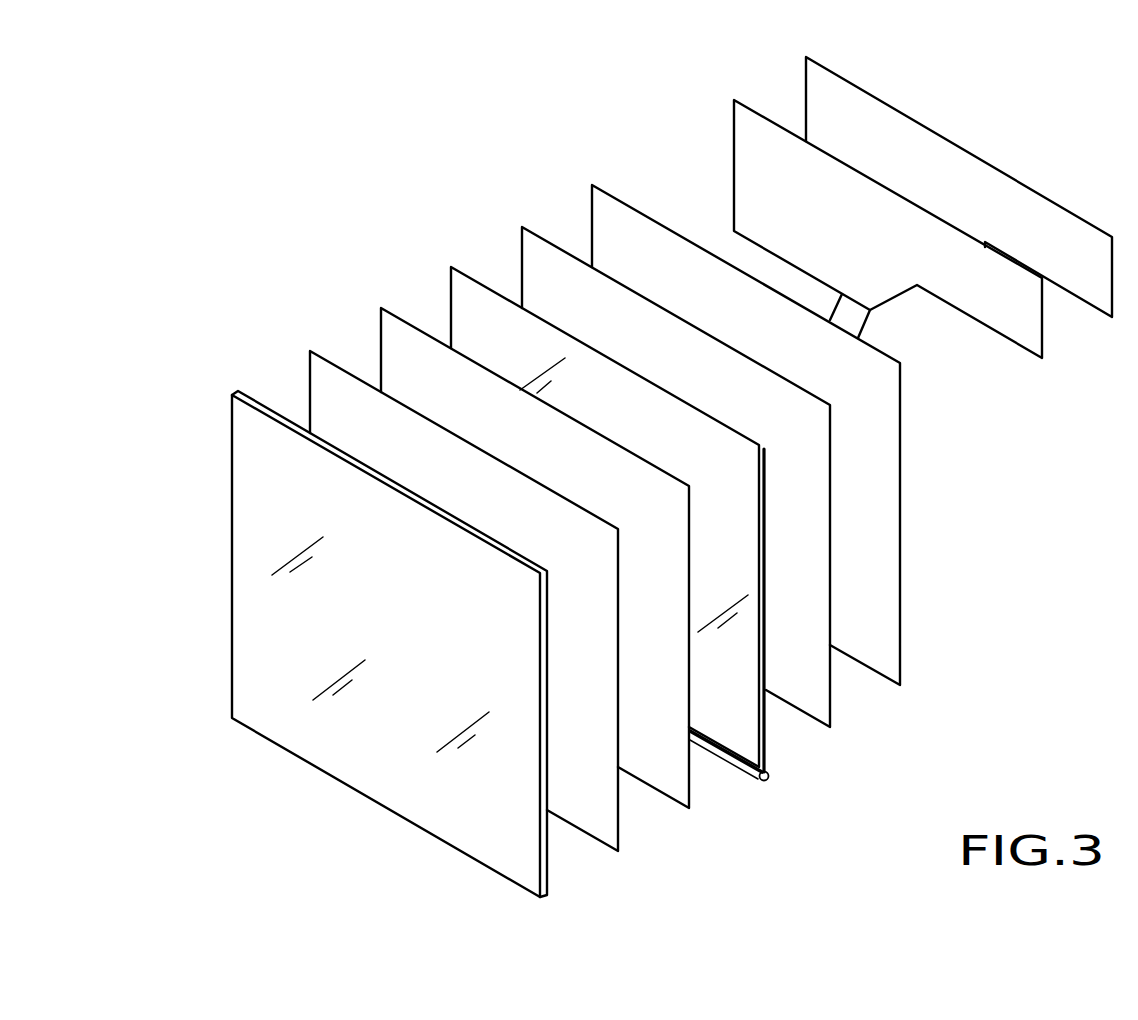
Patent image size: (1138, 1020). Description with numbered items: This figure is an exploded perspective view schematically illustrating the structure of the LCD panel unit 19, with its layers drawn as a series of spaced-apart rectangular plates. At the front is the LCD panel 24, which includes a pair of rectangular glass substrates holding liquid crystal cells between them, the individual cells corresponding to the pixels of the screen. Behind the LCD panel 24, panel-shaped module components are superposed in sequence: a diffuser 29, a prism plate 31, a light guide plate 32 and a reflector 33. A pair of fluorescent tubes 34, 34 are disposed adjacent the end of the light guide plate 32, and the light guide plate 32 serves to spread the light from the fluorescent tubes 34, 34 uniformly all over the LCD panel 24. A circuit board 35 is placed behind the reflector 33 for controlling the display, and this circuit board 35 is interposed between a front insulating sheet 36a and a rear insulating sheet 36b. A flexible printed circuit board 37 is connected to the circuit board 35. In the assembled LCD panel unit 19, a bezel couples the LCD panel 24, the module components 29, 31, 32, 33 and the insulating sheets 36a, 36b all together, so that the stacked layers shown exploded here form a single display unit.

The LCD panel unit 19 is at (347, 182).
The LCD panel 24 is at (237, 392).
The diffuser 29 is at (318, 350).
The prism plate 31 is at (388, 308).
The light guide plate 32 is at (466, 269).
The reflector 33 is at (537, 230).
The fluorescent tube 34 is at (760, 778).
The circuit board 35 is at (752, 105).
The front insulating sheet 36a is at (610, 187).
The rear insulating sheet 36b is at (872, 91).
The flexible printed circuit board 37 is at (862, 333).